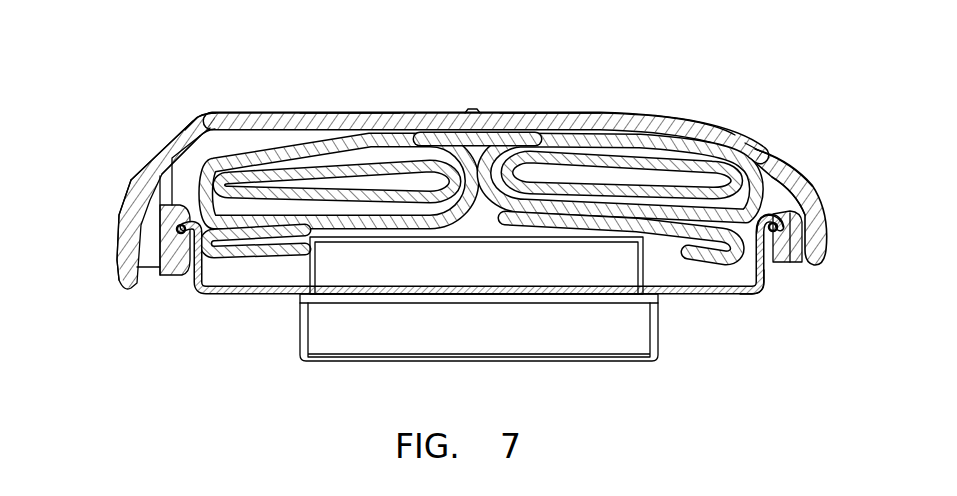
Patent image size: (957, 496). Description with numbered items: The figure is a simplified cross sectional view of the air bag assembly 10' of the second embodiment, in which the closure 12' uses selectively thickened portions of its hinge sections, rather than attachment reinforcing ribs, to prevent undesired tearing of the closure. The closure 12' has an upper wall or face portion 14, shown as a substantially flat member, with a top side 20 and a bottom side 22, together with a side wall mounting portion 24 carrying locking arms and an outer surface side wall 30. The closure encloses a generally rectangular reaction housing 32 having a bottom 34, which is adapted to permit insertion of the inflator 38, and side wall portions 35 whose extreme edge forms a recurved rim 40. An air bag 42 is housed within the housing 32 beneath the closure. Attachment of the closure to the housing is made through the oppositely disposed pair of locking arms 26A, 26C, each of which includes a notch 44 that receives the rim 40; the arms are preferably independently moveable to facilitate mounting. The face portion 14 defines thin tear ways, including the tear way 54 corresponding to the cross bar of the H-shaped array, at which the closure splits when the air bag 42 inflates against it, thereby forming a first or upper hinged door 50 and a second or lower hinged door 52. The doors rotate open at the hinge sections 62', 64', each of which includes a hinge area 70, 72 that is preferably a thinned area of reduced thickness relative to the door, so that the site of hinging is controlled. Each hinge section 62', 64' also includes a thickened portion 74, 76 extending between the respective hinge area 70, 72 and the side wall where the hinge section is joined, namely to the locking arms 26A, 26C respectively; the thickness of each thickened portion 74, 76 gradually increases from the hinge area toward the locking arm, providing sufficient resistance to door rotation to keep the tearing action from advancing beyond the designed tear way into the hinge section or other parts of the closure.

The assembly 10' is at (510, 71).
The closure 12' is at (438, 160).
The face portion 14 is at (343, 113).
The top side 20 is at (550, 113).
The bottom side 22 is at (367, 137).
The side wall mounting portion 24 is at (167, 277).
The locking arm 26A is at (183, 263).
The locking arm 26C is at (785, 264).
The outer surface side wall 30 is at (819, 245).
The housing 32 is at (688, 295).
The bottom 34 is at (237, 295).
The side wall portions 35 is at (747, 297).
The inflator 38 is at (476, 265).
The recurved rim 40 is at (127, 208).
The air bag 42 is at (667, 163).
The notch 44 is at (177, 229).
The first or upper hinged door 50 is at (292, 131).
The second or lower hinged door 52 is at (633, 115).
The tear way 54 is at (471, 113).
The hinge section 62' is at (156, 123).
The hinge section 64' is at (809, 125).
The hinge area 70 is at (190, 118).
The hinge area 72 is at (772, 142).
The thickened portion 74 is at (168, 158).
The thickened portion 76 is at (797, 181).